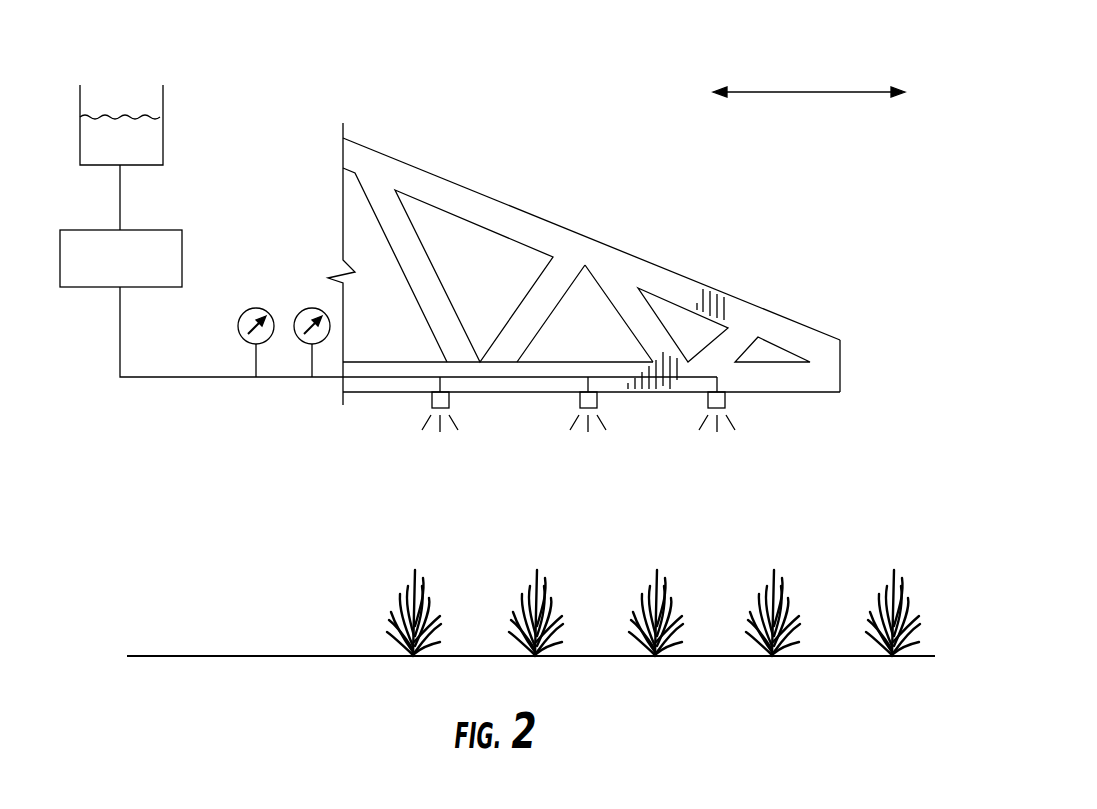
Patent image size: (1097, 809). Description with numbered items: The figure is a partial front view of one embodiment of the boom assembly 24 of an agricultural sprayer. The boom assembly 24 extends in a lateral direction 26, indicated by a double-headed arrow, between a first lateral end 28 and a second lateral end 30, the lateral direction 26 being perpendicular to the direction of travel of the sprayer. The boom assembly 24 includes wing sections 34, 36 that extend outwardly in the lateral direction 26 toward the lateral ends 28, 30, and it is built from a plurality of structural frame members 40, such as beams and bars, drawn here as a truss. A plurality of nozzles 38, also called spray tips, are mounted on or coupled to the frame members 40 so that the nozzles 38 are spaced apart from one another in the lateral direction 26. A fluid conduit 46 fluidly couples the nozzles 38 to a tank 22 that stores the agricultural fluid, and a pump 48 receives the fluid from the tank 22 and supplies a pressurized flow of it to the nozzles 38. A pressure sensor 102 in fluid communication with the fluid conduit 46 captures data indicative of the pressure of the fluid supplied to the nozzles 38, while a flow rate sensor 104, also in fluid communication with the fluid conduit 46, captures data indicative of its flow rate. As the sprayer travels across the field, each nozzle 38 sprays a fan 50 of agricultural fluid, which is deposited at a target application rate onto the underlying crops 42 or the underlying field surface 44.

The tank 22 is at (163, 138).
The pump 48 is at (182, 243).
The fluid conduit 46 is at (175, 378).
The pressure sensor 102 is at (254, 308).
The flow rate sensor 104 is at (309, 308).
The boom assembly 24 is at (396, 136).
The first wing section 34 is at (591, 235).
The second wing section 36 is at (489, 191).
The first lateral end 28 is at (893, 323).
The second lateral end 30 is at (855, 351).
The structural frame members 40 is at (552, 221).
The nozzles 38 is at (432, 400).
The fan 50 is at (435, 448).
The lateral direction 26 is at (800, 92).
The crops 42 is at (373, 597).
The field surface 44 is at (293, 655).